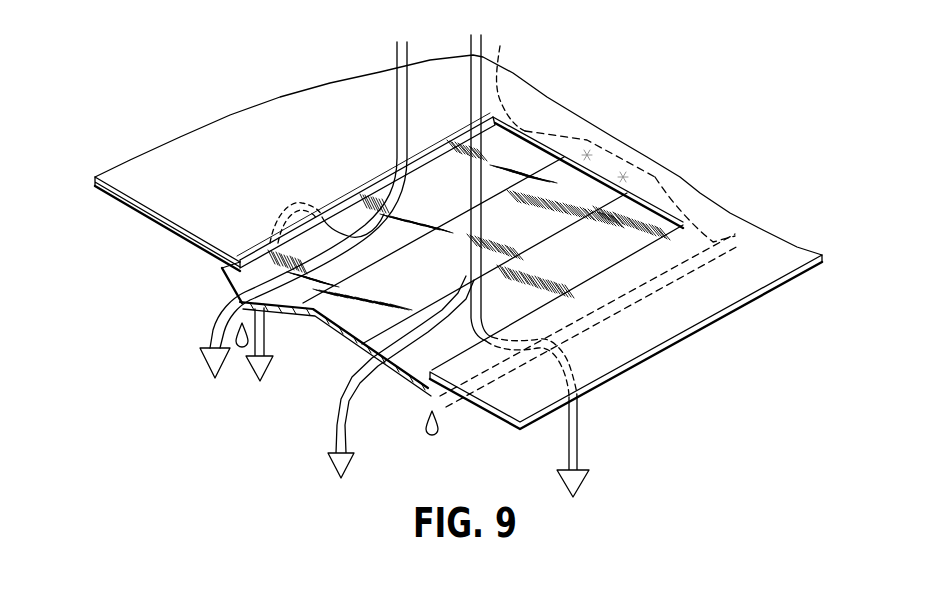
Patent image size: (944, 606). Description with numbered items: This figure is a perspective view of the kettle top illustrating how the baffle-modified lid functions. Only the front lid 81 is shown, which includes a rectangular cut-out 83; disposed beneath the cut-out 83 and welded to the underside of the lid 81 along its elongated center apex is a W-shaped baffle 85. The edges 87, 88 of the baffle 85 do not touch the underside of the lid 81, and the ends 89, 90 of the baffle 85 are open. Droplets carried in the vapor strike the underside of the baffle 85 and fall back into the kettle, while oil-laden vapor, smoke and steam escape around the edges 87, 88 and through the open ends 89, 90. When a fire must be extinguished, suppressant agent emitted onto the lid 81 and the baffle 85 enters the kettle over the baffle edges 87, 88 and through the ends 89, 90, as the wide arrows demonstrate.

The front lid 81 is at (230, 126).
The cut-out 83 is at (444, 144).
The baffle 85 is at (447, 278).
The baffle edge 87 is at (208, 304).
The baffle edge 88 is at (735, 241).
The baffle end 89 is at (523, 124).
The baffle end 90 is at (690, 209).